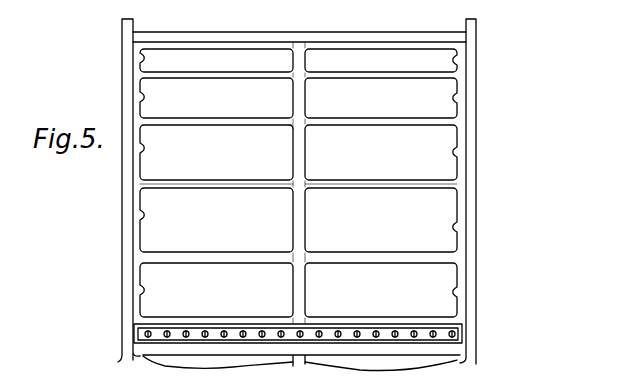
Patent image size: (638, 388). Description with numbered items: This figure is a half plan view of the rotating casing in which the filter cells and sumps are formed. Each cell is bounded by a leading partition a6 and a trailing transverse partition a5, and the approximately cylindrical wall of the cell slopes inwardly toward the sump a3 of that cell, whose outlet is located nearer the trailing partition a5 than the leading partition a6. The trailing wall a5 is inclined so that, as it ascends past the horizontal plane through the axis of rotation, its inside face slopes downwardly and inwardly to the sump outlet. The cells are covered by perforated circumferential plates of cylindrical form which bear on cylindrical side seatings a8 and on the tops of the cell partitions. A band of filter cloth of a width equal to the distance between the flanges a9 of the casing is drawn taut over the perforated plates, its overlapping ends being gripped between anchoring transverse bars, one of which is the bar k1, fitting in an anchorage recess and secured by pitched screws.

The flange of the casing a9 is at (130, 210).
The cylindrical side seating a8 is at (136, 210).
The sump a3 is at (297, 160).
The trailing transverse partition a5 is at (305, 183).
The leading partition a6 is at (293, 130).
The anchoring transverse bar k1 is at (466, 339).